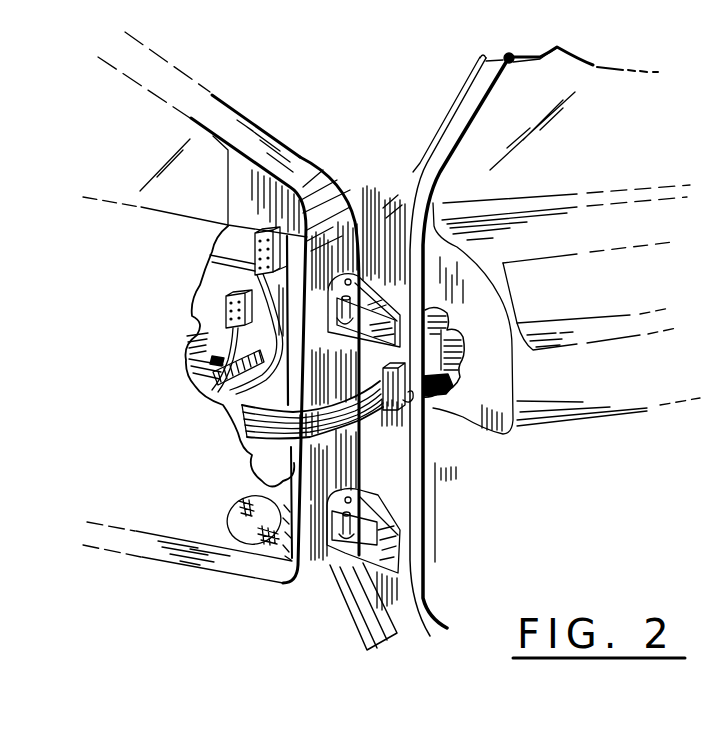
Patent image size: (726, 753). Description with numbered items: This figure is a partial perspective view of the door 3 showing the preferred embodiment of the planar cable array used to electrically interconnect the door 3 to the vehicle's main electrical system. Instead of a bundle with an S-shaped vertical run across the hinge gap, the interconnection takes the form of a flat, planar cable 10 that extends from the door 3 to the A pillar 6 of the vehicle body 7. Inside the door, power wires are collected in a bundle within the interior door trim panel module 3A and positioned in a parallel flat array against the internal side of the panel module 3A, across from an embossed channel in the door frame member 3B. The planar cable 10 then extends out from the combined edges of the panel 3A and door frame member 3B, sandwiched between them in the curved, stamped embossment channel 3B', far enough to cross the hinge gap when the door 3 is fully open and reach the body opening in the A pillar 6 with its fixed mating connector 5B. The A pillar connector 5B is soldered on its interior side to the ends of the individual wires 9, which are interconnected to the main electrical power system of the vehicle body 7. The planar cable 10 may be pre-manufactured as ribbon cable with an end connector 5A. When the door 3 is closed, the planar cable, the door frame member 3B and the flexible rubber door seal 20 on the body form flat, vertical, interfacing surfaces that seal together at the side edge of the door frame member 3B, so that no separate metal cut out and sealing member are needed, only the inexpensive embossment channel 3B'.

The door 3 is at (147, 566).
The interior door trim panel module 3A is at (250, 550).
The door frame member 3B is at (352, 395).
The embossed channel 3B' is at (236, 356).
The end connector 5A is at (407, 400).
The A pillar connector 5B is at (418, 400).
The A pillar 6 is at (400, 188).
The vehicle body 7 is at (518, 477).
The individual wires 9 is at (457, 328).
The planar cable 10 is at (367, 416).
The door seal 20 is at (431, 573).